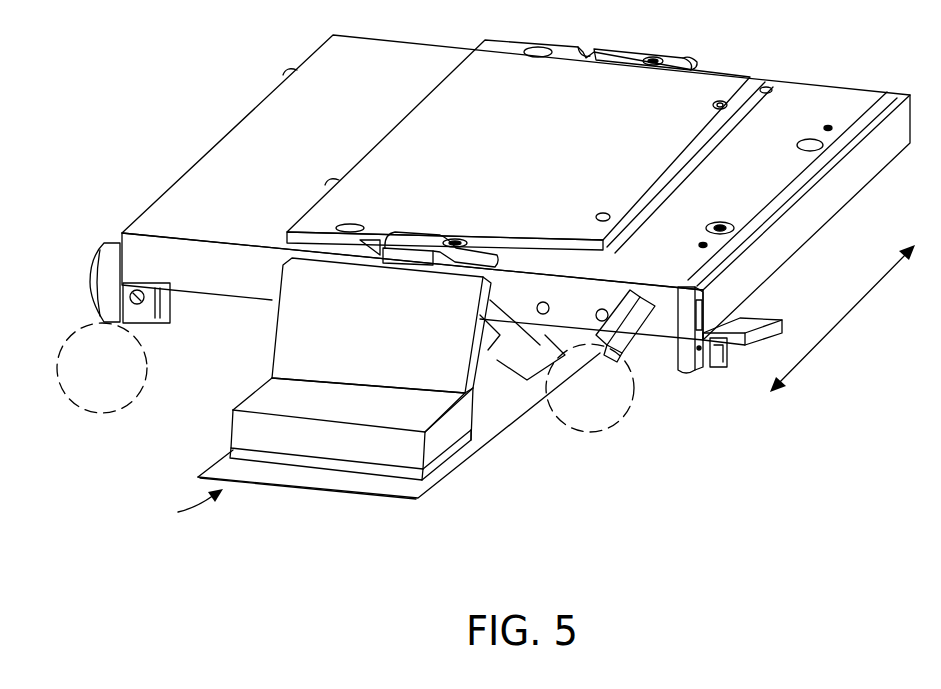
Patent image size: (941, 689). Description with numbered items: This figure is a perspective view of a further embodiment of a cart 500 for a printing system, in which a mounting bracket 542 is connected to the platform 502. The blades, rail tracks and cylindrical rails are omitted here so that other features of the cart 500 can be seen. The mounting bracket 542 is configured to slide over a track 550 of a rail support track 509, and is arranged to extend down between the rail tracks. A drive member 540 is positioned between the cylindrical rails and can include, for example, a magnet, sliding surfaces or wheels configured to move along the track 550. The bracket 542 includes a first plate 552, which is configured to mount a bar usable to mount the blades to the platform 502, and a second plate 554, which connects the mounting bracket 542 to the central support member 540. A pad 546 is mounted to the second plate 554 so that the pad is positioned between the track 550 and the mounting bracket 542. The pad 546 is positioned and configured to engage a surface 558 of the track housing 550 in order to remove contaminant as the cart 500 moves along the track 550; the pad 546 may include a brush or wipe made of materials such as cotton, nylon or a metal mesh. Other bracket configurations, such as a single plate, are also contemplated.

The cart 500 is at (763, 440).
The platform 502 is at (257, 123).
The rail support track 509 is at (181, 509).
The drive member 540 is at (492, 408).
The mounting bracket 542 is at (273, 363).
The pad 546 is at (230, 458).
The track 550 is at (435, 487).
The first plate 552 is at (297, 319).
The second plate 554 is at (233, 427).
The surface of the track housing 558 is at (295, 482).